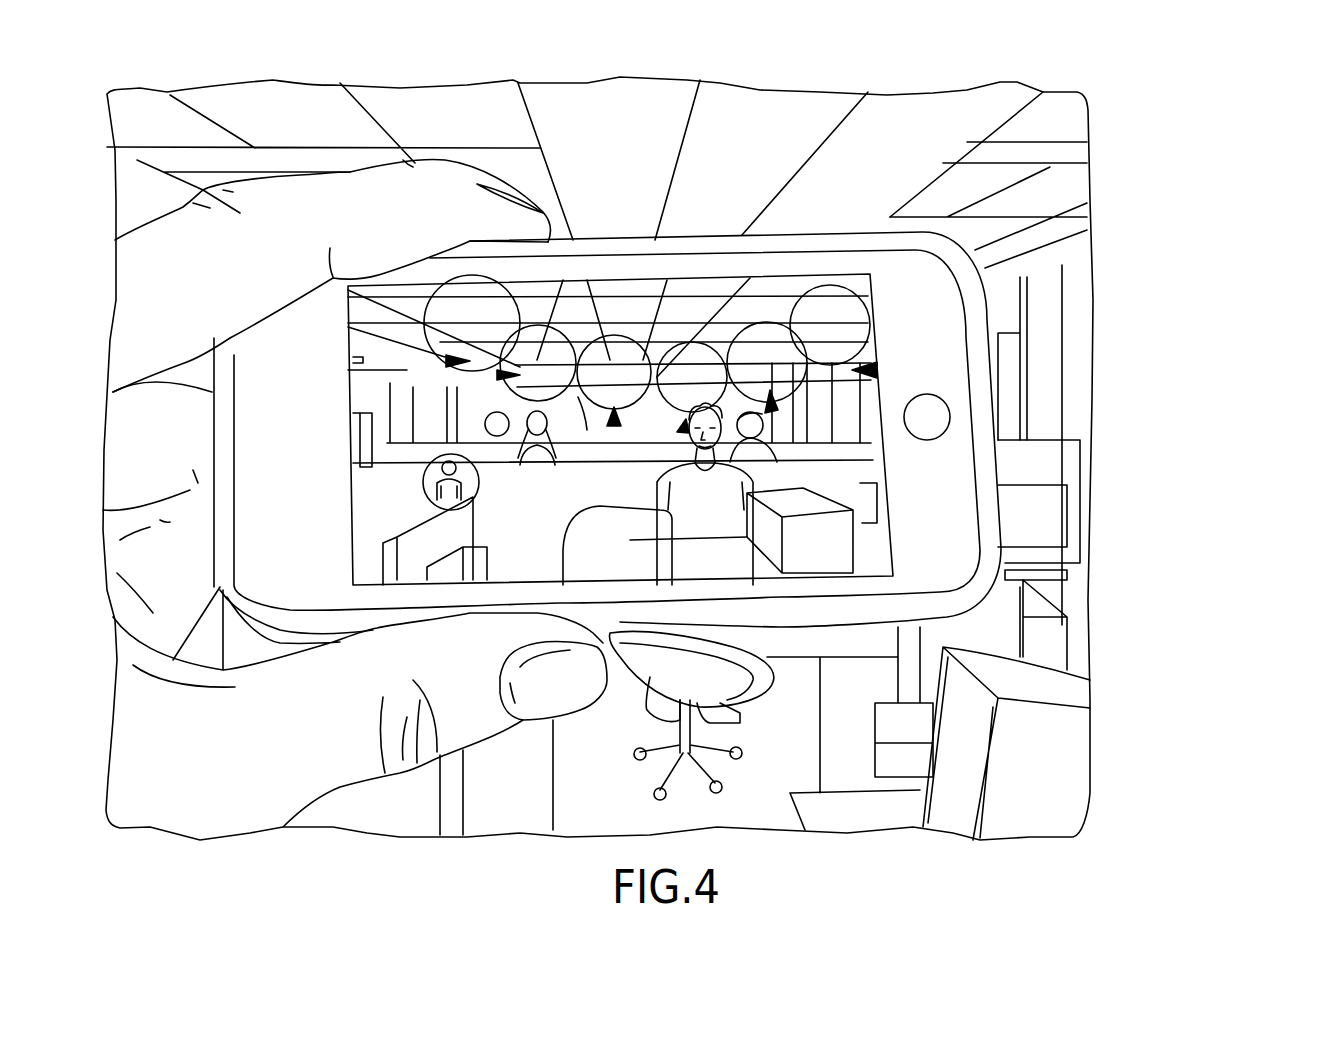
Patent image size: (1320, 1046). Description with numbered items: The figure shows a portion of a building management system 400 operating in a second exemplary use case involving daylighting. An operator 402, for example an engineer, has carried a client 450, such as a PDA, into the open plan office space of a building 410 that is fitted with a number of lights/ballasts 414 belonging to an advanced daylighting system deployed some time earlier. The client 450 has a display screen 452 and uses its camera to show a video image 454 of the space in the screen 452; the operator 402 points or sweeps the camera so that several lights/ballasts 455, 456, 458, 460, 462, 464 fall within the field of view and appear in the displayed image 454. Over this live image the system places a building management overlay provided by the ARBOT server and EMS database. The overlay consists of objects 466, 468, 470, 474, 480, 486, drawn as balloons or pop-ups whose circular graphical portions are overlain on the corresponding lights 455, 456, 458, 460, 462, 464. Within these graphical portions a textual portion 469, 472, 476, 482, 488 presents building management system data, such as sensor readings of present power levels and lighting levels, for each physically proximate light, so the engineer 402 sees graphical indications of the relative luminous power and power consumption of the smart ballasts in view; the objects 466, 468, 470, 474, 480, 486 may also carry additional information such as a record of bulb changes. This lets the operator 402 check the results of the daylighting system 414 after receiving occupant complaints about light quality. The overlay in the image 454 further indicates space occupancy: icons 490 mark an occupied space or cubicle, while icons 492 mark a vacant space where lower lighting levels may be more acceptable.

The building management system 400 is at (1222, 204).
The operator 402 is at (180, 810).
The building 410 is at (1090, 210).
The lights/ballasts 414 is at (890, 217).
The client 450 is at (1020, 558).
The display screen 452 is at (893, 533).
The video image 454 is at (835, 551).
The light/ballast 455 is at (477, 300).
The light/ballast 456 is at (533, 343).
The light/ballast 458 is at (587, 360).
The light/ballast 460 is at (833, 293).
The light/ballast 462 is at (450, 327).
The light/ballast 464 is at (720, 360).
The overlay object 466 is at (446, 361).
The overlay object 468 is at (497, 375).
The textual portion 469 is at (541, 486).
The overlay object 470 is at (614, 426).
The textual portion 472 is at (587, 430).
The overlay object 474 is at (877, 371).
The textual portion 476 is at (862, 343).
The overlay object 480 is at (773, 413).
The textual portion 482 is at (835, 395).
The overlay object 486 is at (700, 467).
The textual portion 488 is at (683, 428).
The occupied space icon 490 is at (463, 481).
The vacant space icon 492 is at (485, 420).